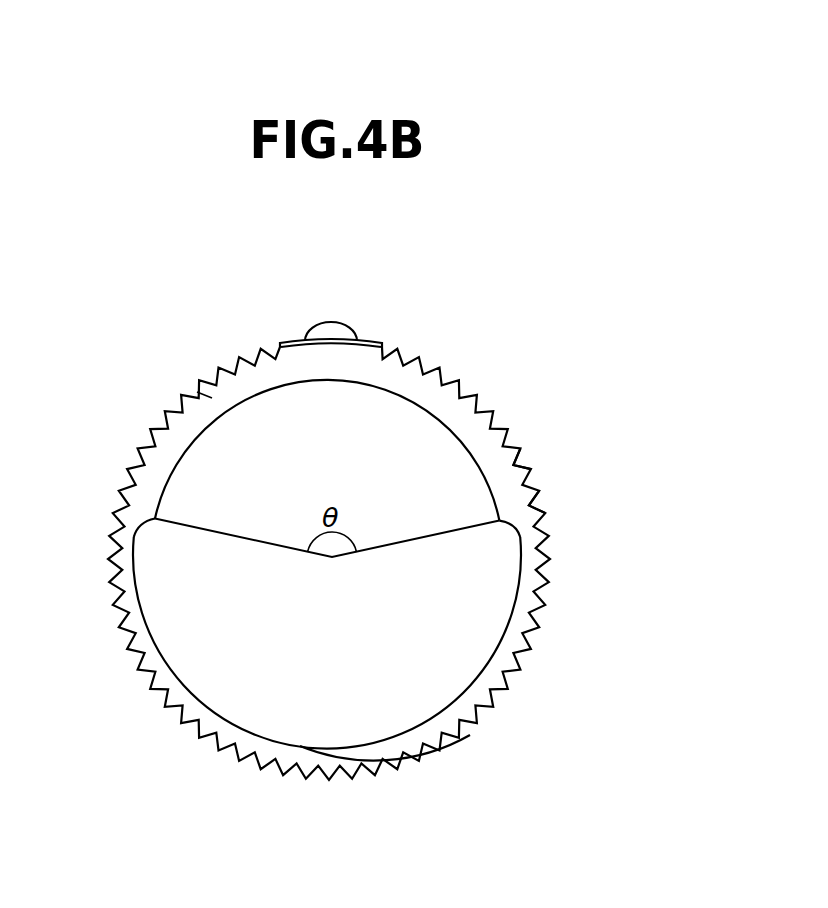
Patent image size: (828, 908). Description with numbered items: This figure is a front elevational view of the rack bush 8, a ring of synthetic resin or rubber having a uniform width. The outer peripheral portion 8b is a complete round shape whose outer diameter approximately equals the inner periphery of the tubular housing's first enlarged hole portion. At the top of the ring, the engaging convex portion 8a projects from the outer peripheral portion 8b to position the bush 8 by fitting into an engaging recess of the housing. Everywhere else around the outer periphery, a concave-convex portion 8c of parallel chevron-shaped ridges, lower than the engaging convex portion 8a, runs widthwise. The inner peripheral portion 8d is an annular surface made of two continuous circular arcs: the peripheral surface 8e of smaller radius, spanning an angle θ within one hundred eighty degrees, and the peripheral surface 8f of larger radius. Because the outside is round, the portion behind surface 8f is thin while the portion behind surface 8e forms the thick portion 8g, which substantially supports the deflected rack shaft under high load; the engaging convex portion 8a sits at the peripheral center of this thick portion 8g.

The rack bush 8 is at (447, 352).
The engaging convex portion 8a is at (331, 322).
The outer peripheral portion 8b is at (535, 431).
The concave-convex portion 8c is at (542, 493).
The inner peripheral portion 8d is at (178, 636).
The peripheral surface 8e is at (400, 397).
The peripheral surface 8f is at (385, 738).
The thick portion 8g is at (190, 384).